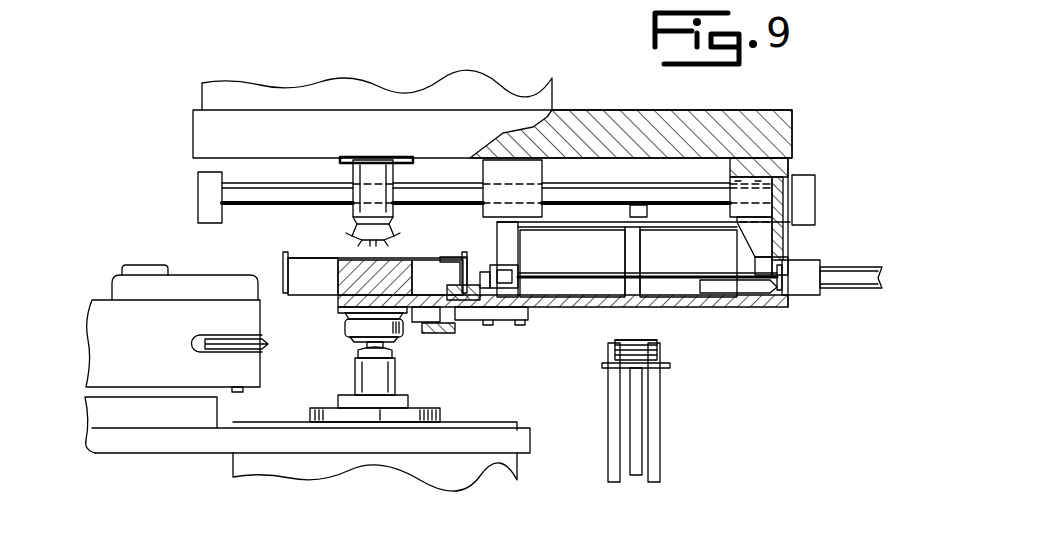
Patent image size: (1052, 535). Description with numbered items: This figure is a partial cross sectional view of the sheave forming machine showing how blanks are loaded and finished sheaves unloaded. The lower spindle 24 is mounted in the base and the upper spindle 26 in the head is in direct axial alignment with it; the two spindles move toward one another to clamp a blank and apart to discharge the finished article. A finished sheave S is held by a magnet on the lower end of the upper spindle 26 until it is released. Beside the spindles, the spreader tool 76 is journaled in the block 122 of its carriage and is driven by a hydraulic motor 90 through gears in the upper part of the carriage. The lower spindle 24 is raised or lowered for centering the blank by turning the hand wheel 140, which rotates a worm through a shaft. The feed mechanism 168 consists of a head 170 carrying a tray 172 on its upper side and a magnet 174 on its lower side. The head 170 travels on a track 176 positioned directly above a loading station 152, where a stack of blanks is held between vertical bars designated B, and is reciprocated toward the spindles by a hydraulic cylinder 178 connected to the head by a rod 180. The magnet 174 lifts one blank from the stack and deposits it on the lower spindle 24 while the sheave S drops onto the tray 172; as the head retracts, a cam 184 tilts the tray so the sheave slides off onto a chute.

The spindle 26 is at (358, 172).
The sheave S is at (355, 235).
The tray 172 is at (420, 256).
The track 176 is at (604, 190).
The rod 180 is at (610, 272).
The feed mechanism 168 is at (807, 242).
The hydraulic cylinder 178 is at (847, 275).
The cam 184 is at (743, 287).
The station 152 is at (670, 350).
The hand wheel 140 is at (670, 368).
The bracket assembly B is at (638, 342).
The magnet 174 is at (340, 327).
The spindle 24 is at (388, 373).
The spreader tool 76 is at (267, 340).
The head 170 is at (280, 263).
The hydraulic motor 90 is at (153, 263).
The block 122 is at (103, 313).